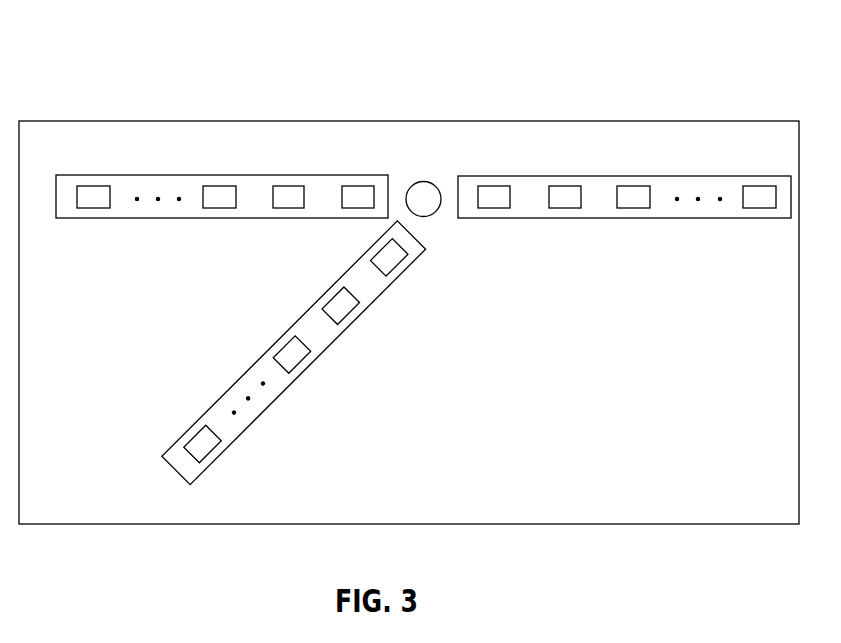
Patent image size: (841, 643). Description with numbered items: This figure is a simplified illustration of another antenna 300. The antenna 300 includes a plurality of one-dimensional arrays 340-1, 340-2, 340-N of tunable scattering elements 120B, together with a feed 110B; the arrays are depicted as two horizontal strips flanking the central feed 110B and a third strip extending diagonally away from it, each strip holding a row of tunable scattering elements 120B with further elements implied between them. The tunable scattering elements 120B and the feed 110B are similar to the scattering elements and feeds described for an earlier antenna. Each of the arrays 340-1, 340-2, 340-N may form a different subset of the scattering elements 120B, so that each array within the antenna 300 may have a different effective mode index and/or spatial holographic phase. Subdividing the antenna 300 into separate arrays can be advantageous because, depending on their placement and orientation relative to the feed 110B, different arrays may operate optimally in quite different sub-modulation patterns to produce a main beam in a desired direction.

The antenna 300 is at (260, 42).
The one-dimensional array 340-1 is at (70, 218).
The one-dimensional array 340-2 is at (200, 476).
The one-dimensional array 340-N is at (762, 218).
The feed 110B is at (418, 181).
The tunable scattering element 120B is at (82, 186).